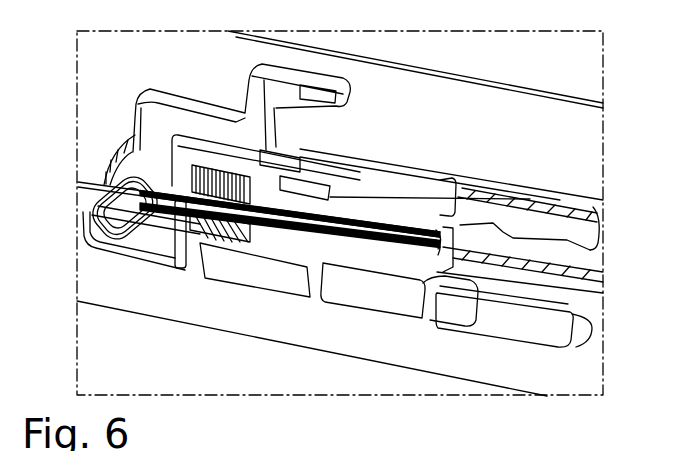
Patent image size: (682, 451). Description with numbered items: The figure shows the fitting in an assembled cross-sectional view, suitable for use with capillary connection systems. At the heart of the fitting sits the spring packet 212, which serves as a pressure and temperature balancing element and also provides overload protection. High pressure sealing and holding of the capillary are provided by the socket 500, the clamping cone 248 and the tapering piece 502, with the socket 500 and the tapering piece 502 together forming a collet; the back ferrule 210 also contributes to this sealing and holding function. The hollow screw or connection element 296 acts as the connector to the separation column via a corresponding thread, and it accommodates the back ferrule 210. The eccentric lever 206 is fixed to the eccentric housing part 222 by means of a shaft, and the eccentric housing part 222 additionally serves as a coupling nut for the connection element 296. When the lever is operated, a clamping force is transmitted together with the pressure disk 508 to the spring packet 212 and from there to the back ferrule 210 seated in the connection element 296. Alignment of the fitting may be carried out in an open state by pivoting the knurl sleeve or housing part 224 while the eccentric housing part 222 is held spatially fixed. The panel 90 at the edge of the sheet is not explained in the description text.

The eccentric lever 206 is at (255, 98).
The connection element 296 is at (278, 210).
The back ferrule 210 is at (272, 207).
The tapering piece 502 is at (443, 174).
The socket 500 is at (360, 218).
The clamping cone 248 is at (560, 195).
The pressure disk 508 is at (153, 242).
The spring packet 212 is at (181, 232).
The eccentric housing part 222 is at (230, 262).
The housing part 224 is at (390, 300).
The panel 90 is at (640, 450).